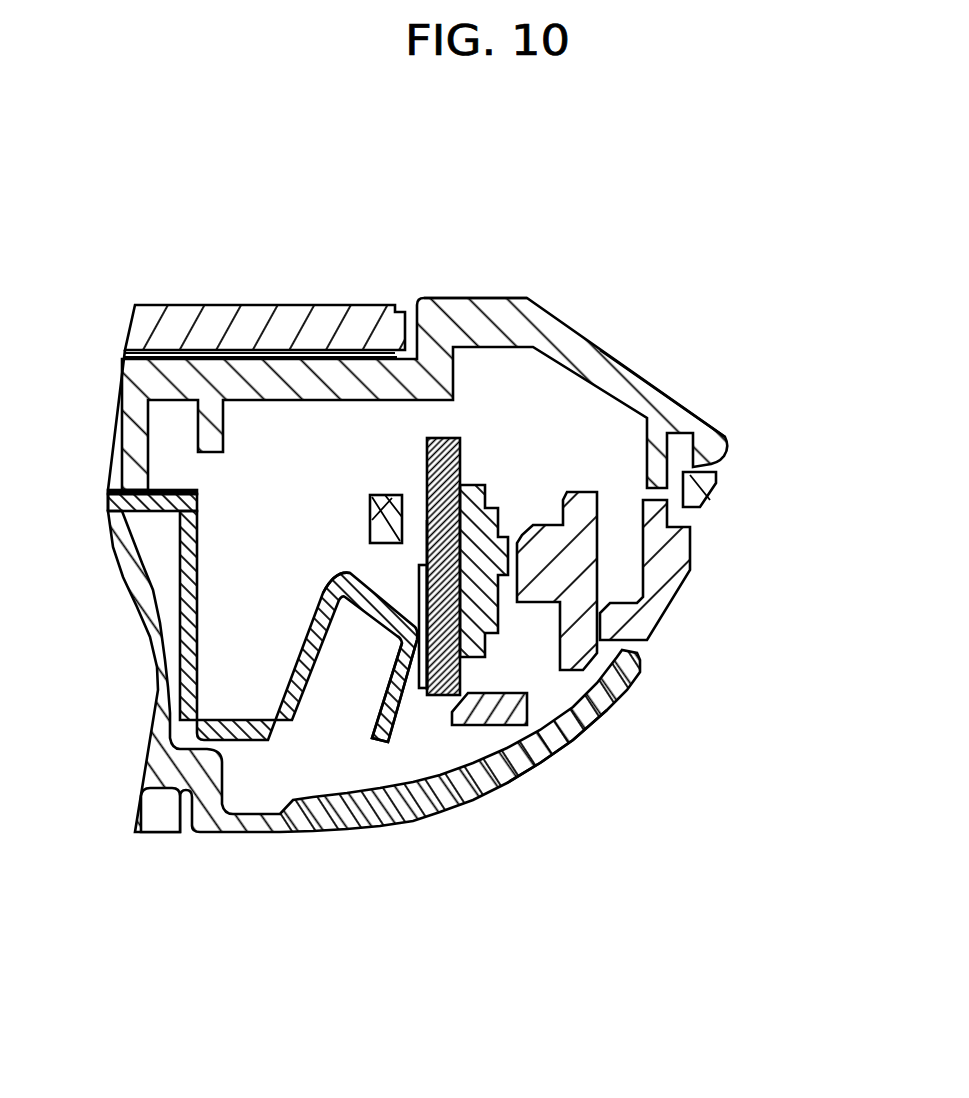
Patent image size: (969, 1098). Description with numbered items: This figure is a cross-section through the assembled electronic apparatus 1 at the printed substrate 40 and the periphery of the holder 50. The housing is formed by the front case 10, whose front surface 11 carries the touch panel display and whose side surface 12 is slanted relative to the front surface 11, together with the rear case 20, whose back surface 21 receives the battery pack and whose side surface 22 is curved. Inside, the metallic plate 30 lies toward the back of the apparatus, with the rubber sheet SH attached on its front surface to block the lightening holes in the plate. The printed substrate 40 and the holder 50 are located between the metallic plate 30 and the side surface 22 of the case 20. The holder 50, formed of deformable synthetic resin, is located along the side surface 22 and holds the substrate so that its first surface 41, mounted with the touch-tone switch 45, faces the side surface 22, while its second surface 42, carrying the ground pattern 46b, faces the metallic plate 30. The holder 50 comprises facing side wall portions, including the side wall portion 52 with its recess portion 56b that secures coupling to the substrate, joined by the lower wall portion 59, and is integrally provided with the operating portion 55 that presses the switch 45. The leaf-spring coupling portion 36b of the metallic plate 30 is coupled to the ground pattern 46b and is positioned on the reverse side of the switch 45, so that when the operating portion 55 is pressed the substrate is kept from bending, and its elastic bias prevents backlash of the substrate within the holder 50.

The electronic apparatus 1 is at (575, 260).
The front case 10 is at (578, 325).
The front surface 11 is at (450, 297).
The side surface 12 is at (660, 377).
The rear case 20 is at (614, 710).
The back surface 21 is at (284, 833).
The side surface 22 is at (562, 750).
The metallic plate 30 is at (199, 684).
The coupling portion 36b is at (397, 682).
The printed substrate 40 is at (462, 455).
The first surface 41 is at (460, 438).
The second surface 42 is at (421, 567).
The switch 45 is at (490, 525).
The ground pattern 46b is at (424, 548).
The holder 50 is at (676, 595).
The side wall portion 52 is at (371, 499).
The operating portion 55 is at (667, 550).
The recess portion 56b is at (373, 560).
The lower wall portion 59 is at (497, 713).
The sheet SH is at (177, 485).